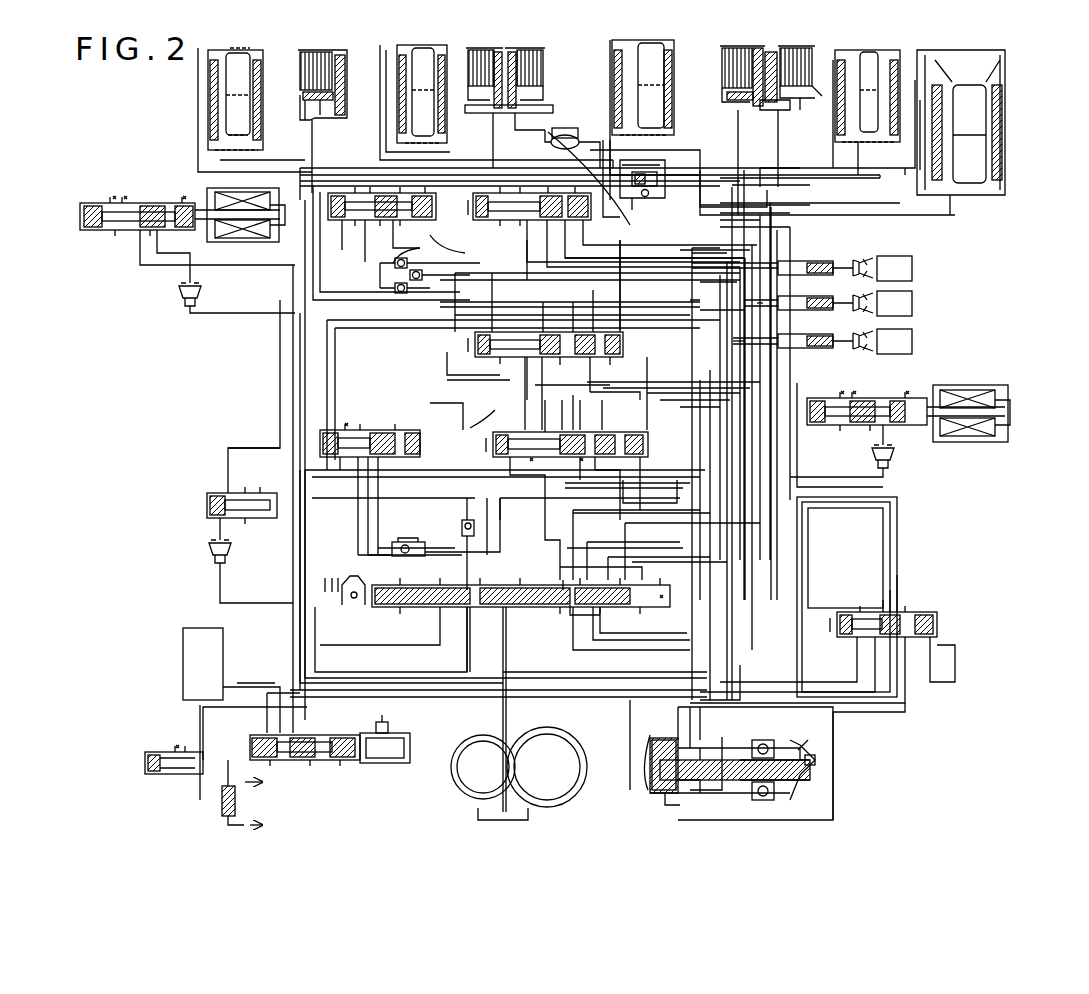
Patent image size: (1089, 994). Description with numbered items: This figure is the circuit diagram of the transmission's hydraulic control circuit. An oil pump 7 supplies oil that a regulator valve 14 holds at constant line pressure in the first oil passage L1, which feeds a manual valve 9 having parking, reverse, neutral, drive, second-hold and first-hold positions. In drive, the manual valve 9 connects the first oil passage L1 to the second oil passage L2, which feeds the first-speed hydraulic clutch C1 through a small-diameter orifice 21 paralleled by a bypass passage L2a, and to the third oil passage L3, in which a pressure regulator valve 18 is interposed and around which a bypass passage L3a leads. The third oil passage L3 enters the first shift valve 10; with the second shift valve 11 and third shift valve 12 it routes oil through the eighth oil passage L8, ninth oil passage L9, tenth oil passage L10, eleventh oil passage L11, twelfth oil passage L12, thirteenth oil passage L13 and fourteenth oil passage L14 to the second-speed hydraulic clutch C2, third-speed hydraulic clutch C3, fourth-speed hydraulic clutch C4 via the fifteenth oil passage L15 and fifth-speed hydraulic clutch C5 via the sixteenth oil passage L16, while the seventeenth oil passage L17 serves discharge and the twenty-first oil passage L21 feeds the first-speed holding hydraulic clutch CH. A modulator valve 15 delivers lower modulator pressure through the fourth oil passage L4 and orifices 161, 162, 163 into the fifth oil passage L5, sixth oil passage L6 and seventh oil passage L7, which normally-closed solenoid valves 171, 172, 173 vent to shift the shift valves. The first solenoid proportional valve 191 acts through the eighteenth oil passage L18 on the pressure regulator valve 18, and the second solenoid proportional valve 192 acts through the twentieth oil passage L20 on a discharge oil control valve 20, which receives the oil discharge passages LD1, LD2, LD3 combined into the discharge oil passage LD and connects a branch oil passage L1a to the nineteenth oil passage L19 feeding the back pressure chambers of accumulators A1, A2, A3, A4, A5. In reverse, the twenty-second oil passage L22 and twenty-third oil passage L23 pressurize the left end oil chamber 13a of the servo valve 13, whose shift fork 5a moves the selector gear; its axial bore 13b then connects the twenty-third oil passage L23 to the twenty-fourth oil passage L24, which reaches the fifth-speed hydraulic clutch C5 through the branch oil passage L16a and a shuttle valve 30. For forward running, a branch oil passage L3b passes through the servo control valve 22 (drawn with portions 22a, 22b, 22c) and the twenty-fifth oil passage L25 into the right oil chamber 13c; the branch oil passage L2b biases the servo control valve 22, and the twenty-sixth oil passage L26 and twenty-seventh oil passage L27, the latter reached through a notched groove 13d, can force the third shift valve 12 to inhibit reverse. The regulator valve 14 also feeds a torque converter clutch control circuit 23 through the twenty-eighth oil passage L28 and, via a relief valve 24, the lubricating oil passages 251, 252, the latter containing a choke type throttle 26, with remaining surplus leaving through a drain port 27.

The accumulator A1 is at (672, 40).
The accumulator A2 is at (895, 50).
The accumulator A3 is at (257, 47).
The accumulator A4 is at (440, 45).
The accumulator A5 is at (1008, 58).
The first-speed hydraulic clutch C1 is at (740, 40).
The second-speed hydraulic clutch C2 is at (815, 42).
The third-speed hydraulic clutch C3 is at (338, 50).
The fourth-speed hydraulic clutch C4 is at (494, 48).
The fifth-speed hydraulic clutch C5 is at (545, 48).
The first-speed holding hydraulic clutch CH is at (764, 52).
The shift fork 5a is at (812, 748).
The oil pump 7 is at (447, 788).
The manual valve 9 is at (432, 612).
The No. 1 shift valve 10 is at (645, 455).
The No. 2 shift valve 11 is at (497, 328).
The No. 3 shift valve 12 is at (470, 202).
The servo valve 13 is at (645, 736).
The left end oil chamber 13a is at (652, 792).
The axial bore 13b is at (706, 782).
The right side oil chamber 13c is at (665, 805).
The notched groove 13d is at (690, 748).
The regulator valve 14 is at (338, 766).
The modulator valve 15 is at (211, 490).
The orifice 161 is at (810, 348).
The orifice 162 is at (812, 300).
The orifice 163 is at (812, 262).
The No. 1 solenoid valve 171 is at (915, 338).
The No. 2 solenoid valve 172 is at (915, 300).
The No. 3 solenoid valve 173 is at (915, 262).
The pressure regulator valve 18 is at (315, 435).
The No. 1 solenoid proportional valve 191 is at (975, 380).
The No. 2 solenoid proportional valve 192 is at (138, 238).
The discharge oil control valve 20 is at (350, 190).
The small-diameter orifice 21 is at (465, 520).
The servo control valve 22 is at (850, 650).
The valve port 22a is at (938, 630).
The valve port 22b is at (925, 608).
The valve port 22c is at (862, 612).
The hydraulic control circuit 23 is at (188, 626).
The relief valve 24 is at (172, 752).
The No. 1 lubricating oil passage 251 is at (240, 780).
The No. 2 lubricating oil passage 252 is at (246, 825).
The choke type throttle 26 is at (222, 805).
The drain port 27 is at (198, 795).
The shuttle valve 30 is at (570, 138).
The No. 1 oil passage L1 is at (502, 722).
The branch oil passage L1a is at (410, 248).
The No. 2 oil passage L2 is at (775, 155).
The bypass passage L2a is at (500, 495).
The branch oil passage L2b is at (940, 660).
The No. 3 oil passage L3 is at (370, 505).
The bypass passage L3a is at (375, 546).
The branch oil passage L3b is at (897, 498).
The No. 4 oil passage L4 is at (365, 322).
The No. 5 oil passage L5 is at (818, 344).
The No. 6 oil passage L6 is at (822, 305).
The No. 7 oil passage L7 is at (820, 262).
The No. 8 oil passage L8 is at (600, 372).
The No. 9 oil passage L9 is at (570, 607).
The No. 10 oil passage L10 is at (784, 128).
The No. 11 oil passage L11 is at (527, 366).
The No. 12 oil passage L12 is at (300, 302).
The No. 13 oil passage L13 is at (497, 412).
The No. 14 oil passage L14 is at (568, 238).
The No. 15 oil passage L15 is at (447, 160).
The No. 16 oil passage L16 is at (548, 130).
The branch oil passage L16a is at (632, 225).
The No. 17 oil passage L17 is at (788, 468).
The No. 18 oil passage L18 is at (305, 358).
The No. 19 oil passage L19 is at (262, 172).
The No. 20 oil passage L20 is at (165, 267).
The No. 21 oil passage L21 is at (736, 130).
The No. 22 oil passage L22 is at (545, 540).
The No. 23 oil passage L23 is at (625, 475).
The No. 24 oil passage L24 is at (740, 665).
The No. 25 oil passage L25 is at (863, 714).
The No. 26 oil passage L26 is at (890, 528).
The No. 27 oil passage L27 is at (722, 737).
The No. 28 oil passage L28 is at (240, 683).
The combined discharge oil passage LD is at (370, 270).
The No. 1 oil discharge passage LD1 is at (445, 380).
The No. 2 oil discharge passage LD2 is at (445, 350).
The No. 3 oil discharge passage LD3 is at (424, 262).